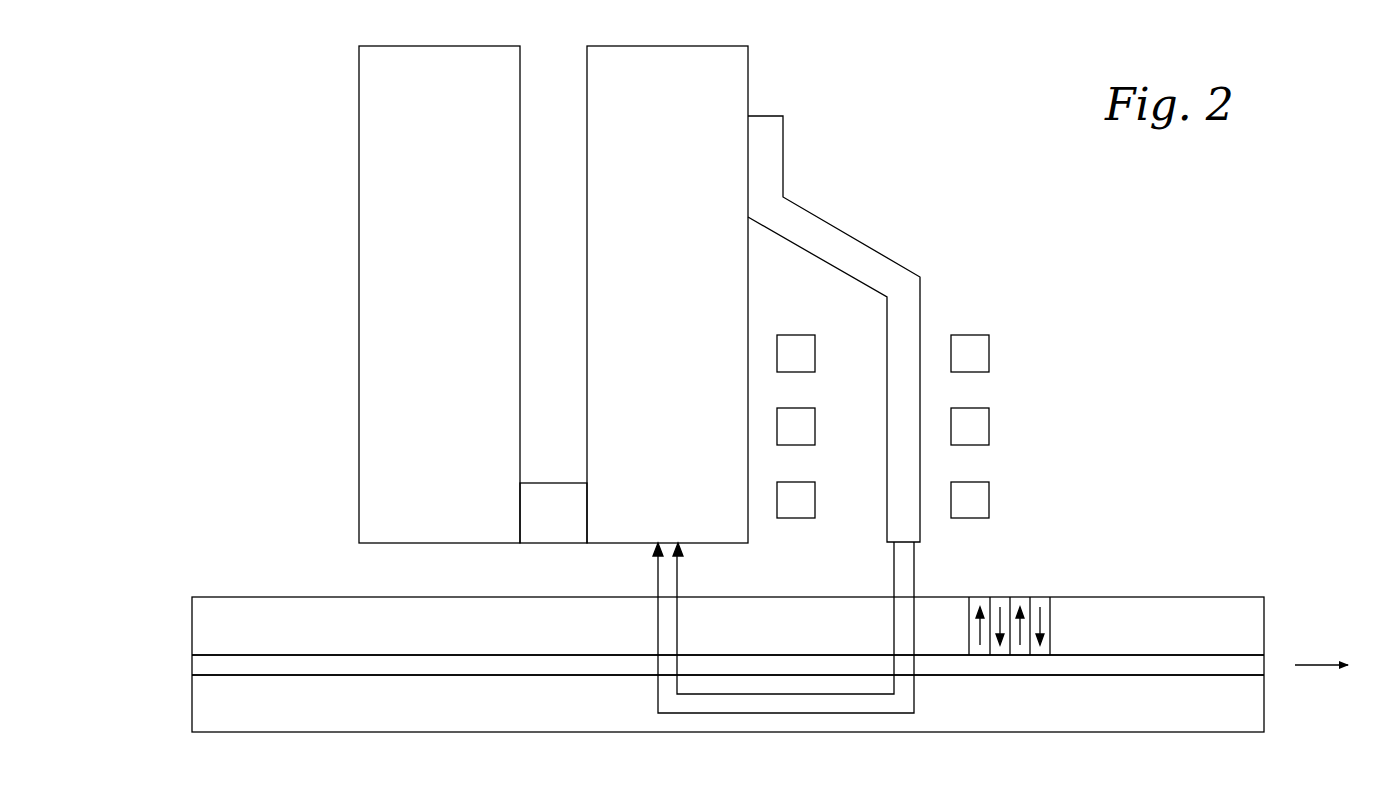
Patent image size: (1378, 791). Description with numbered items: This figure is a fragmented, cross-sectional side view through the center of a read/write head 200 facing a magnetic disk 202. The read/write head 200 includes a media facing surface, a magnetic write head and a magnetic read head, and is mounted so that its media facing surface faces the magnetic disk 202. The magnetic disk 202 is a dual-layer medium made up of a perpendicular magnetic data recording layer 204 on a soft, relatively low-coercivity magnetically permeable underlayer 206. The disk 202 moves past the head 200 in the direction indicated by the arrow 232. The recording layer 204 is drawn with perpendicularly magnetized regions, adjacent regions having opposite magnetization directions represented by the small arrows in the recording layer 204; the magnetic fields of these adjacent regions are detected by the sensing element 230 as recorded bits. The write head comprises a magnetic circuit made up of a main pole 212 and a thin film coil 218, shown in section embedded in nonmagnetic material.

The read/write head 200 is at (218, 86).
The magnetic disk 202 is at (213, 563).
The perpendicular magnetic data recording layer 204 is at (192, 627).
The magnetically permeable underlayer 206 is at (192, 665).
The main pole 212 is at (909, 462).
The thin film coil 218 is at (805, 353).
The sensing element 230 is at (553, 513).
The arrow 232 is at (1310, 665).